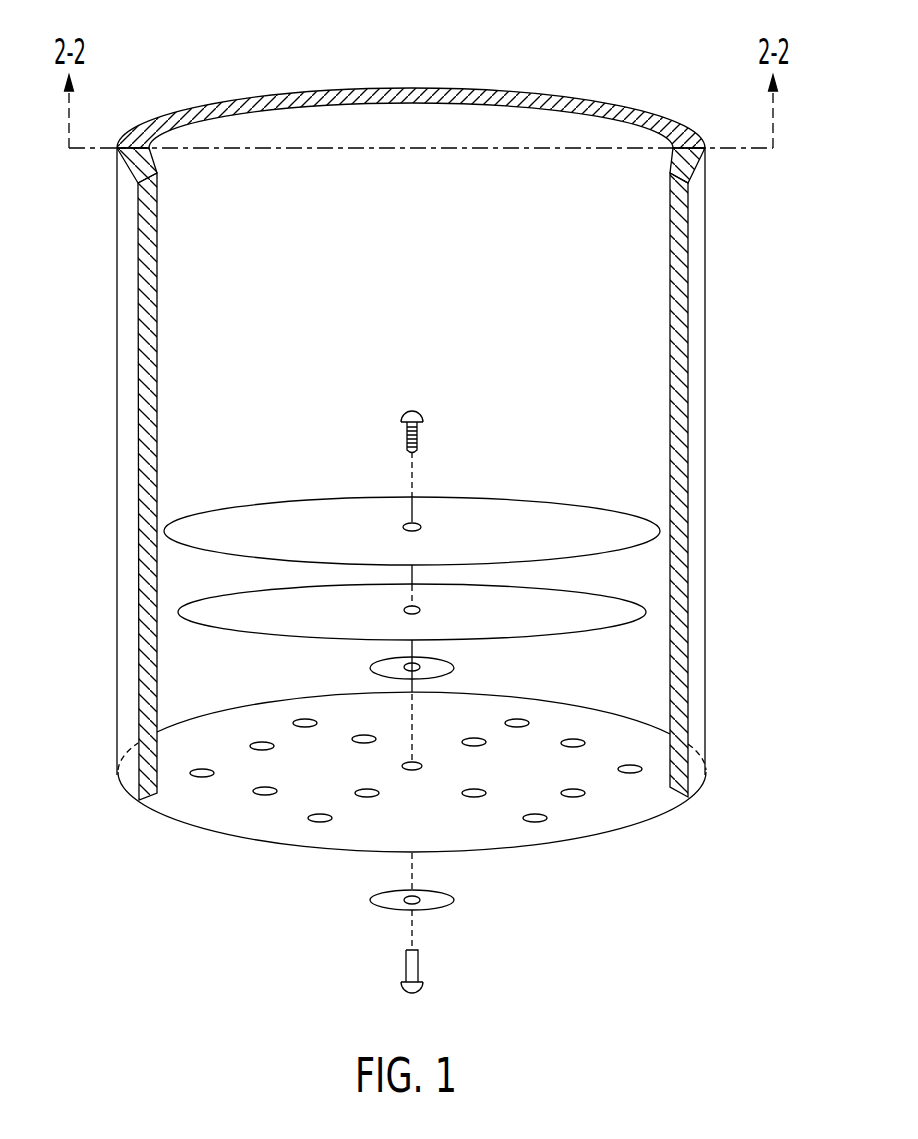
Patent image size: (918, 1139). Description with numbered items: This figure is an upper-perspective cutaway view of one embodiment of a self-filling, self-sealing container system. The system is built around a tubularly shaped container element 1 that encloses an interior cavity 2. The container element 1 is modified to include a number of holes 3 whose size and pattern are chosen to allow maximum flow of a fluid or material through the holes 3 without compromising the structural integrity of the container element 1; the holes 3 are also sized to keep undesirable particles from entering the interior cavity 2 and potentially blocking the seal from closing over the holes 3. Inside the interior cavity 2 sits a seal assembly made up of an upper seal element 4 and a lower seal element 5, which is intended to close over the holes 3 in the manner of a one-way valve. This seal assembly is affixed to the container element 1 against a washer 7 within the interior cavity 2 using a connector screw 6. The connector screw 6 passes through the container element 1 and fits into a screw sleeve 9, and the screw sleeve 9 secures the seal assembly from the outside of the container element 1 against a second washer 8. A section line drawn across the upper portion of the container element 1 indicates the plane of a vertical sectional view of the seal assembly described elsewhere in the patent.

The container element 1 is at (128, 263).
The interior cavity 2 is at (470, 205).
The holes 3 is at (252, 790).
The upper seal element 4 is at (205, 527).
The lower seal element 5 is at (213, 613).
The connector screw 6 is at (400, 430).
The washer 7 is at (380, 673).
The washer 8 is at (362, 905).
The screw sleeve 9 is at (400, 962).